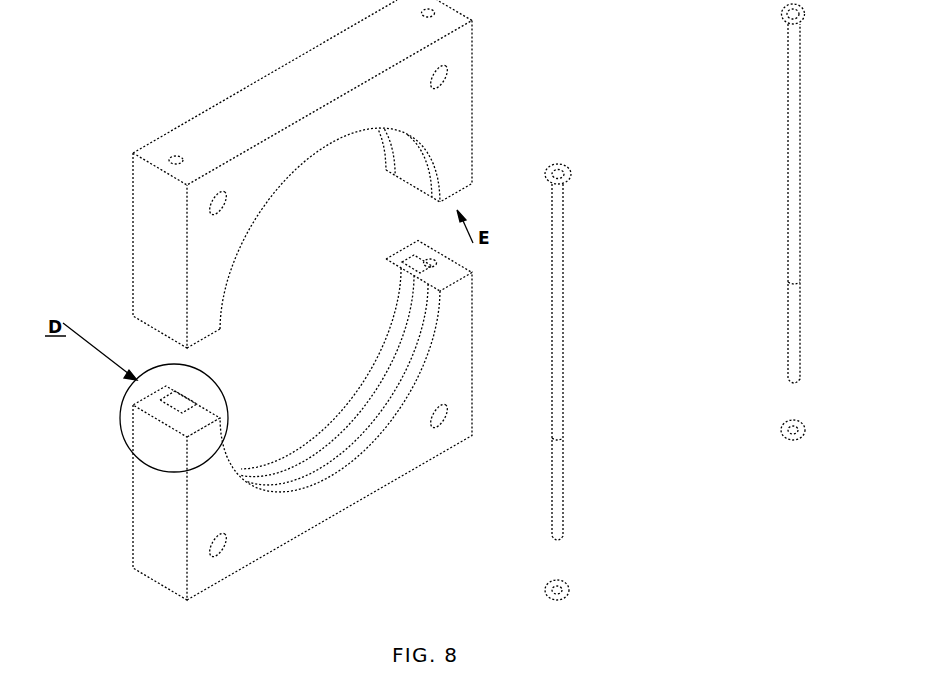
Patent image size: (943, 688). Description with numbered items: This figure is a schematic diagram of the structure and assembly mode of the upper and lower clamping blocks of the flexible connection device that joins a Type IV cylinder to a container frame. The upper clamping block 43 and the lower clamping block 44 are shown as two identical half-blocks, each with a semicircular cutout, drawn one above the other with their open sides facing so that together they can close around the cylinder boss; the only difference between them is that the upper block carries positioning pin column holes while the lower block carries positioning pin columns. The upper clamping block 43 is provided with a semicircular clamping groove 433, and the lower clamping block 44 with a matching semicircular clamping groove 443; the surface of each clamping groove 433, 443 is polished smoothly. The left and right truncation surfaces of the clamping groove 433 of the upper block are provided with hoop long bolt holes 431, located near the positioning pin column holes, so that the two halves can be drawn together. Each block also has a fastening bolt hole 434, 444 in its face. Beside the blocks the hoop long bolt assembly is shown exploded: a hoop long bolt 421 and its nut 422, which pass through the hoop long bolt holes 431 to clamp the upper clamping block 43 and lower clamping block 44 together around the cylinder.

The upper clamping block 43 is at (277, 103).
The hoop long bolt hole 431 is at (170, 158).
The clamping groove 433 is at (410, 163).
The fastening bolt hole 434 is at (223, 198).
The lower clamping block 44 is at (155, 545).
The clamping groove 443 is at (343, 432).
The fastening bolt hole 444 is at (223, 546).
The hoop long bolt 421 is at (793, 135).
The nut 422 is at (793, 440).